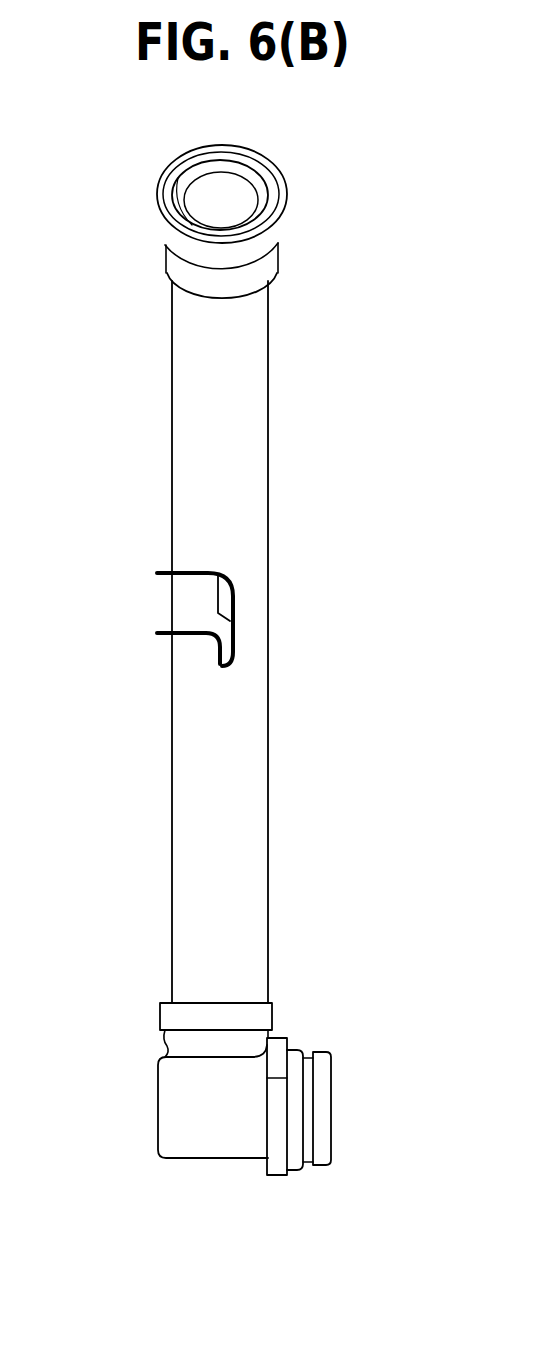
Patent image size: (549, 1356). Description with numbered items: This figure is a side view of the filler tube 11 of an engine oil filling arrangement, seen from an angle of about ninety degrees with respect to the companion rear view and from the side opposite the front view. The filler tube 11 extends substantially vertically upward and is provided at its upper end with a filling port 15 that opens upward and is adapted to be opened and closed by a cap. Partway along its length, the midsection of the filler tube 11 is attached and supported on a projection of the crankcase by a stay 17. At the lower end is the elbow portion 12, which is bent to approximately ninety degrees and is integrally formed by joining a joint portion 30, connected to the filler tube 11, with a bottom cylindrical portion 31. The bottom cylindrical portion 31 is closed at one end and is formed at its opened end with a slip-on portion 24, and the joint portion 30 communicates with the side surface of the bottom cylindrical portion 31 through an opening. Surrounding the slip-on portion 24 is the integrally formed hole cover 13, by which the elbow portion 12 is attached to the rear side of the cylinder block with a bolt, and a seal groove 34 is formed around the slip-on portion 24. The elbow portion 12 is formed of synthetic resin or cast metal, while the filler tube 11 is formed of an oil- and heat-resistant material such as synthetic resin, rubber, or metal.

The filler tube 11 is at (172, 437).
The elbow portion 12 is at (155, 1138).
The hole cover 13 is at (266, 1152).
The filling port 15 is at (158, 203).
The stay 17 is at (188, 604).
The slip-on portion 24 is at (296, 1172).
The joint portion 30 is at (160, 1044).
The bottom cylindrical portion 31 is at (205, 1156).
The seal groove 34 is at (308, 1050).